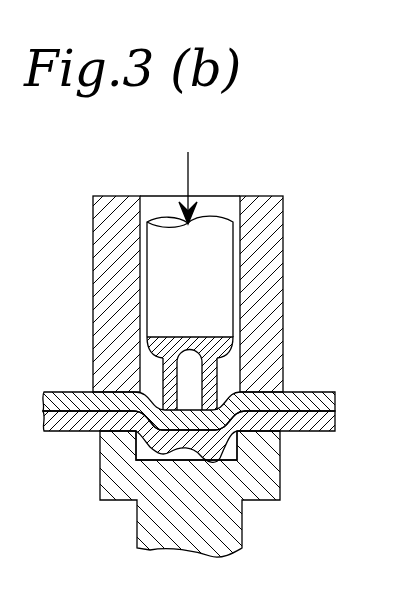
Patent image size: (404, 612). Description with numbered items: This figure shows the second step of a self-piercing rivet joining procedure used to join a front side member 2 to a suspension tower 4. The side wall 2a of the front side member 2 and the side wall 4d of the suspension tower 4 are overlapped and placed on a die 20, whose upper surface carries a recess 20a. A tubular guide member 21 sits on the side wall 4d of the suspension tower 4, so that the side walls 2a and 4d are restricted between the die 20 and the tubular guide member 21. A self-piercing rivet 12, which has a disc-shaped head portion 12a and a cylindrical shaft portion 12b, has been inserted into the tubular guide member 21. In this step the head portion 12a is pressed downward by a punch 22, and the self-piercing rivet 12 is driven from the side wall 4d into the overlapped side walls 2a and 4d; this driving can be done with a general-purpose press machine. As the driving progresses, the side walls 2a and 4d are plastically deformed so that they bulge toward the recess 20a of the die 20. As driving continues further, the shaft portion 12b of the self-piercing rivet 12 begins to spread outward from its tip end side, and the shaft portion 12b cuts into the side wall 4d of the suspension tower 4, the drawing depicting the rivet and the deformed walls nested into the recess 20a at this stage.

The tubular guide member 21 is at (270, 245).
The punch 22 is at (210, 283).
The self-piercing rivet 12 is at (272, 368).
The head portion 12a is at (232, 346).
The shaft portion 12b is at (218, 377).
The side wall 4d is at (68, 389).
The suspension tower 4 is at (172, 373).
The side wall 2a is at (67, 434).
The front side member 2 is at (175, 466).
The die 20 is at (227, 498).
The recess 20a is at (281, 477).